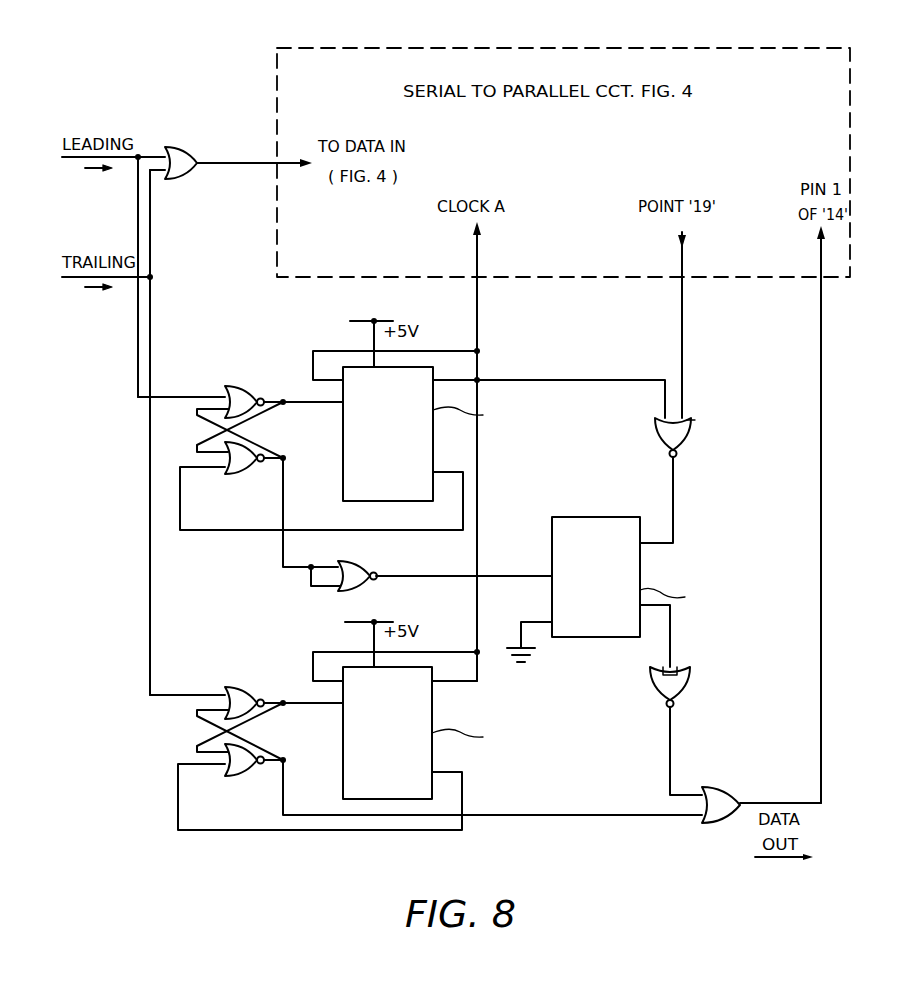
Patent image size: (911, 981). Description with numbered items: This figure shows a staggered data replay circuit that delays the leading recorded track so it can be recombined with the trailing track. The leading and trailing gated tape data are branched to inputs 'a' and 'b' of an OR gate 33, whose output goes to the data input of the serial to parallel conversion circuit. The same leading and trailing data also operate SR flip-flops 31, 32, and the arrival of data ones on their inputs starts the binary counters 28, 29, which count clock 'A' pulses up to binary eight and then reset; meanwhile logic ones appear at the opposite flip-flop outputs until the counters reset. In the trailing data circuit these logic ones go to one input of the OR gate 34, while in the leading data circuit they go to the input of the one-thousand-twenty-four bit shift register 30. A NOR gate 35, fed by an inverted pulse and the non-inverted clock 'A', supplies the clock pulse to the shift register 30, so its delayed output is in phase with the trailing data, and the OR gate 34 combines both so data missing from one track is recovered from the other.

The binary counter 28 is at (343, 465).
The binary counter 29 is at (432, 718).
The 1024 bit shift register 30 is at (640, 563).
The SR flip-flop 31 is at (232, 385).
The SR flip-flop 32 is at (233, 684).
The OR gate 33 is at (195, 150).
The OR gate 34 is at (705, 822).
The NOR gate 35 is at (683, 440).